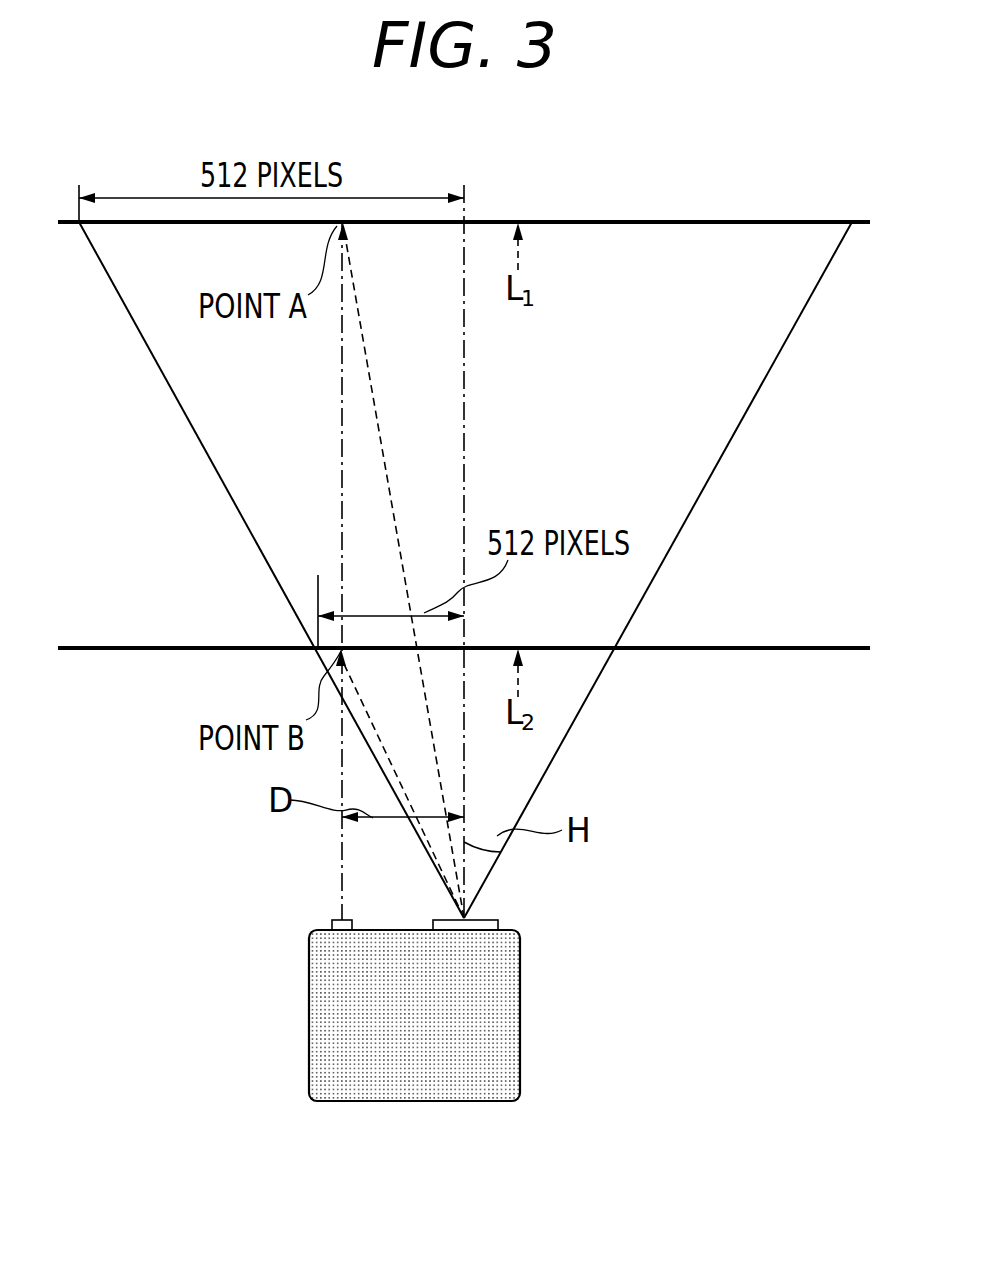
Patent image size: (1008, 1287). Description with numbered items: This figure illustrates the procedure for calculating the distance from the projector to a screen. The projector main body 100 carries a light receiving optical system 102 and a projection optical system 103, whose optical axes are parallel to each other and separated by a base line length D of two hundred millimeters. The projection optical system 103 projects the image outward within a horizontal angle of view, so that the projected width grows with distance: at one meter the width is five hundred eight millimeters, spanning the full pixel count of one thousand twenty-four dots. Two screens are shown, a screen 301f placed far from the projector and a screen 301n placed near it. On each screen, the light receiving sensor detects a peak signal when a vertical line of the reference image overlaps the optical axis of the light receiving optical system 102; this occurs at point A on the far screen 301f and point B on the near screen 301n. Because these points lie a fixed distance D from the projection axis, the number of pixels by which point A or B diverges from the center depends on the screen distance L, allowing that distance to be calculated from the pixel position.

The screen placed far from the projector 301f is at (145, 223).
The screen placed near the projector 301n is at (115, 649).
The projector main body 100 is at (510, 1020).
The light receiving optical system 102 is at (332, 922).
The projection optical system 103 is at (498, 922).